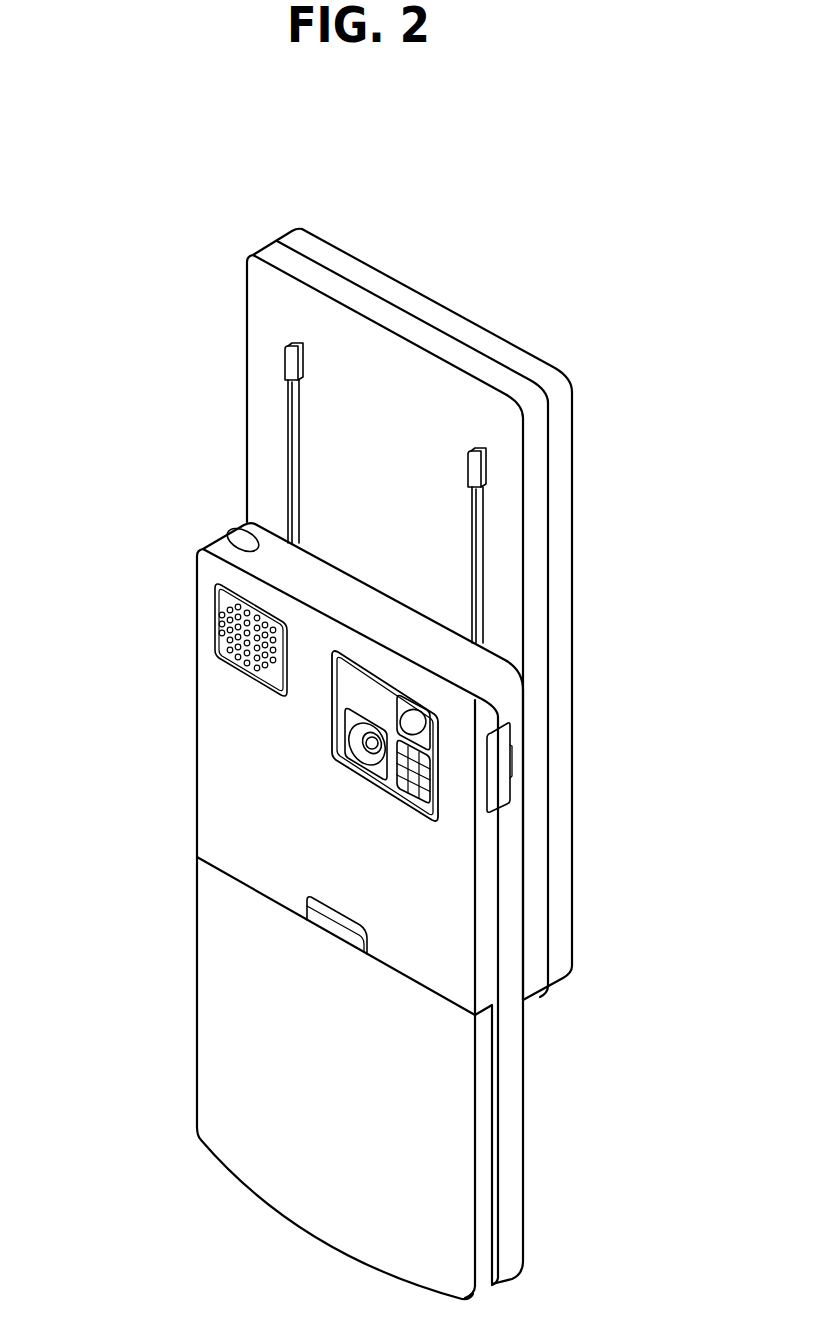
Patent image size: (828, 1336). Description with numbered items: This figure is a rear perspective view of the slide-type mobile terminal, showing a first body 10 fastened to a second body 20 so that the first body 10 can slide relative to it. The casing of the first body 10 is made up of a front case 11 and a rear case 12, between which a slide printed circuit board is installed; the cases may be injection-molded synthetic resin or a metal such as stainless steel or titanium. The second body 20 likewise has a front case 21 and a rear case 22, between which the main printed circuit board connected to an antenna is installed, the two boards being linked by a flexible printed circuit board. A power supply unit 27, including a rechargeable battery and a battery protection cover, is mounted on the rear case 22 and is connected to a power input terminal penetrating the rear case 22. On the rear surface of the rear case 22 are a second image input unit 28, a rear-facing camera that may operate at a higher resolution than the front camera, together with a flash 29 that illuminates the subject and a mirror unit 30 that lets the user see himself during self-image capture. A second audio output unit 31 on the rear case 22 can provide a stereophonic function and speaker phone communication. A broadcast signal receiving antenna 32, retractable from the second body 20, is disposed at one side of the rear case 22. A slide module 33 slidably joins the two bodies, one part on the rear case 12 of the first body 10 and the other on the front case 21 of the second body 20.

The first body 10 is at (343, 584).
The front case 11 is at (305, 239).
The rear case 12 is at (277, 253).
The second body 20 is at (361, 887).
The front case 21 is at (513, 1075).
The rear case 22 is at (487, 977).
The power supply unit 27 is at (207, 967).
The second image input unit 28 is at (372, 749).
The flash 29 is at (436, 798).
The mirror unit 30 is at (414, 721).
The second audio output unit 31 is at (213, 619).
The broadcast signal receiving antenna 32 is at (238, 537).
The slide module 33 is at (472, 580).